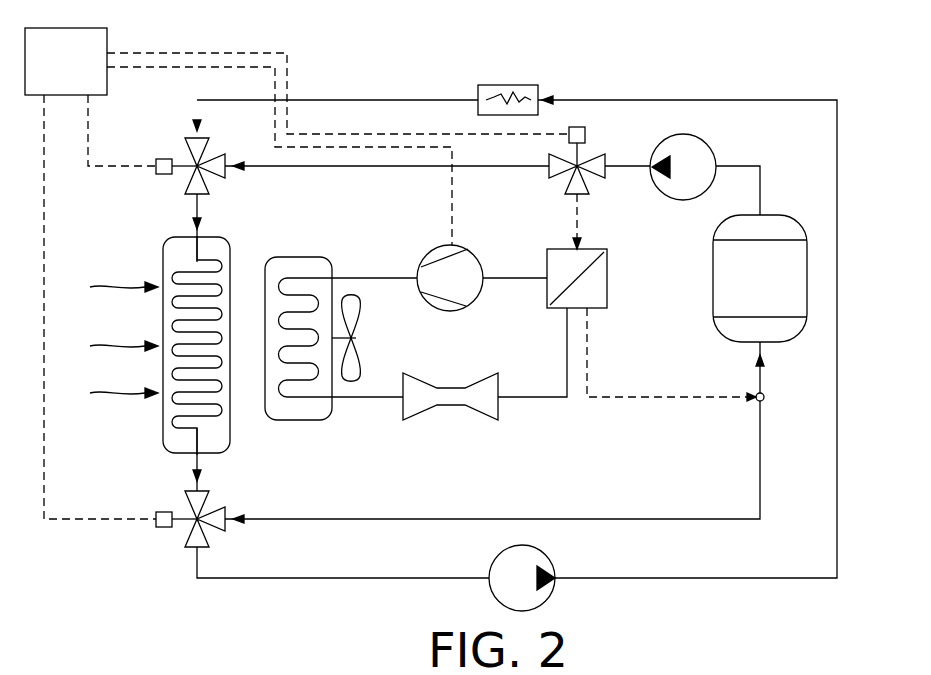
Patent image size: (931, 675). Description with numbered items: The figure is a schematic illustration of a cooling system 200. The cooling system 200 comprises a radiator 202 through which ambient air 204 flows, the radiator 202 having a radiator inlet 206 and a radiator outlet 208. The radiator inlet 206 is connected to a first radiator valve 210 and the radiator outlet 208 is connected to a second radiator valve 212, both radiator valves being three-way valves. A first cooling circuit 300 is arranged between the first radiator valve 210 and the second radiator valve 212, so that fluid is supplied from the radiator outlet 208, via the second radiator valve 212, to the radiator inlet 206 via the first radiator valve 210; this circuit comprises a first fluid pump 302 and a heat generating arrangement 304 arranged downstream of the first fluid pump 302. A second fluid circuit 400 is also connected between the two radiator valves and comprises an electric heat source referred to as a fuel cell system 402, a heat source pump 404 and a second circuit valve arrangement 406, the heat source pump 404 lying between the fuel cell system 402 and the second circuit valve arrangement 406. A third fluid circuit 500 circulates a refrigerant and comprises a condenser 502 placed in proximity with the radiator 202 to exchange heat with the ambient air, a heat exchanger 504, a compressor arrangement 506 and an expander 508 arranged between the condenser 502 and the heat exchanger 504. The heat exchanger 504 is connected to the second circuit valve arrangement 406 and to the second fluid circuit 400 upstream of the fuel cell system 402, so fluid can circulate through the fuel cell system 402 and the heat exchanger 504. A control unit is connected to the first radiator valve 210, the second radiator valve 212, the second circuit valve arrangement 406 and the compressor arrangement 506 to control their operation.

The cooling system 200 is at (347, 72).
The radiator 202 is at (163, 265).
The ambient air 204 is at (108, 287).
The radiator inlet 206 is at (183, 238).
The radiator outlet 208 is at (193, 453).
The first radiator valve 210 is at (190, 158).
The second radiator valve 212 is at (185, 535).
The first cooling circuit 300 is at (727, 578).
The first fluid pump 302 is at (553, 597).
The heat generating arrangement 304 is at (505, 85).
The second fluid circuit 400 is at (762, 460).
The fuel cell system 402 is at (806, 278).
The heat source pump 404 is at (706, 142).
The second circuit valve arrangement 406 is at (592, 158).
The third fluid circuit 500 is at (537, 397).
The condenser 502 is at (300, 257).
The heat exchanger 504 is at (607, 278).
The compressor arrangement 506 is at (428, 252).
The expander 508 is at (455, 405).